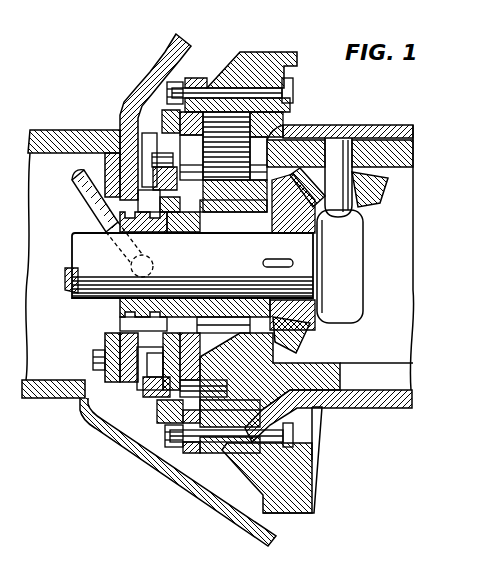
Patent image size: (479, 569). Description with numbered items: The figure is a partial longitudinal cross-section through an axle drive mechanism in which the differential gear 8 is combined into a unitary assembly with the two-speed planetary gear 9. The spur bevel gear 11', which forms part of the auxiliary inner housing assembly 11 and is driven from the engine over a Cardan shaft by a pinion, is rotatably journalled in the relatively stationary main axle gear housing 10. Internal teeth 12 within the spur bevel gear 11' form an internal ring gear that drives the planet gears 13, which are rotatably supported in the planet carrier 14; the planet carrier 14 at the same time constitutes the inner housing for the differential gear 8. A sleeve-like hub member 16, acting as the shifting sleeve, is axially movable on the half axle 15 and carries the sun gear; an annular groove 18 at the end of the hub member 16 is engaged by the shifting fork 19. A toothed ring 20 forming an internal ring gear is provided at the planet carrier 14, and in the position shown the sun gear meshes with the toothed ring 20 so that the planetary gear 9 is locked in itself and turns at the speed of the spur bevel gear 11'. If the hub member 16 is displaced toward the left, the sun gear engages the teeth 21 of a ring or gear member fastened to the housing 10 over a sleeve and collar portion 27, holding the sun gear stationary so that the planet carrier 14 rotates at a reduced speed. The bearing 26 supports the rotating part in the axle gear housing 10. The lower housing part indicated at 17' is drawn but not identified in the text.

The differential gear 8 is at (328, 259).
The two-speed planetary gear 9 is at (253, 150).
The main axle gear housing 10 is at (163, 55).
The auxiliary inner housing assembly 11 is at (329, 283).
The spur bevel gear 11' is at (311, 460).
The internal teeth 12 is at (228, 423).
The planet gears 13 is at (223, 123).
The planet carrier 14 is at (158, 147).
The half axle 15 is at (73, 300).
The sleeve-like hub member 16 is at (170, 233).
The lower housing 17' is at (260, 363).
The annular groove 18 is at (125, 318).
The shifting fork 19 is at (79, 182).
The toothed ring 20 is at (267, 322).
The teeth 21 is at (190, 212).
The bearing 26 is at (137, 118).
The sleeve and collar portion 27 is at (117, 207).